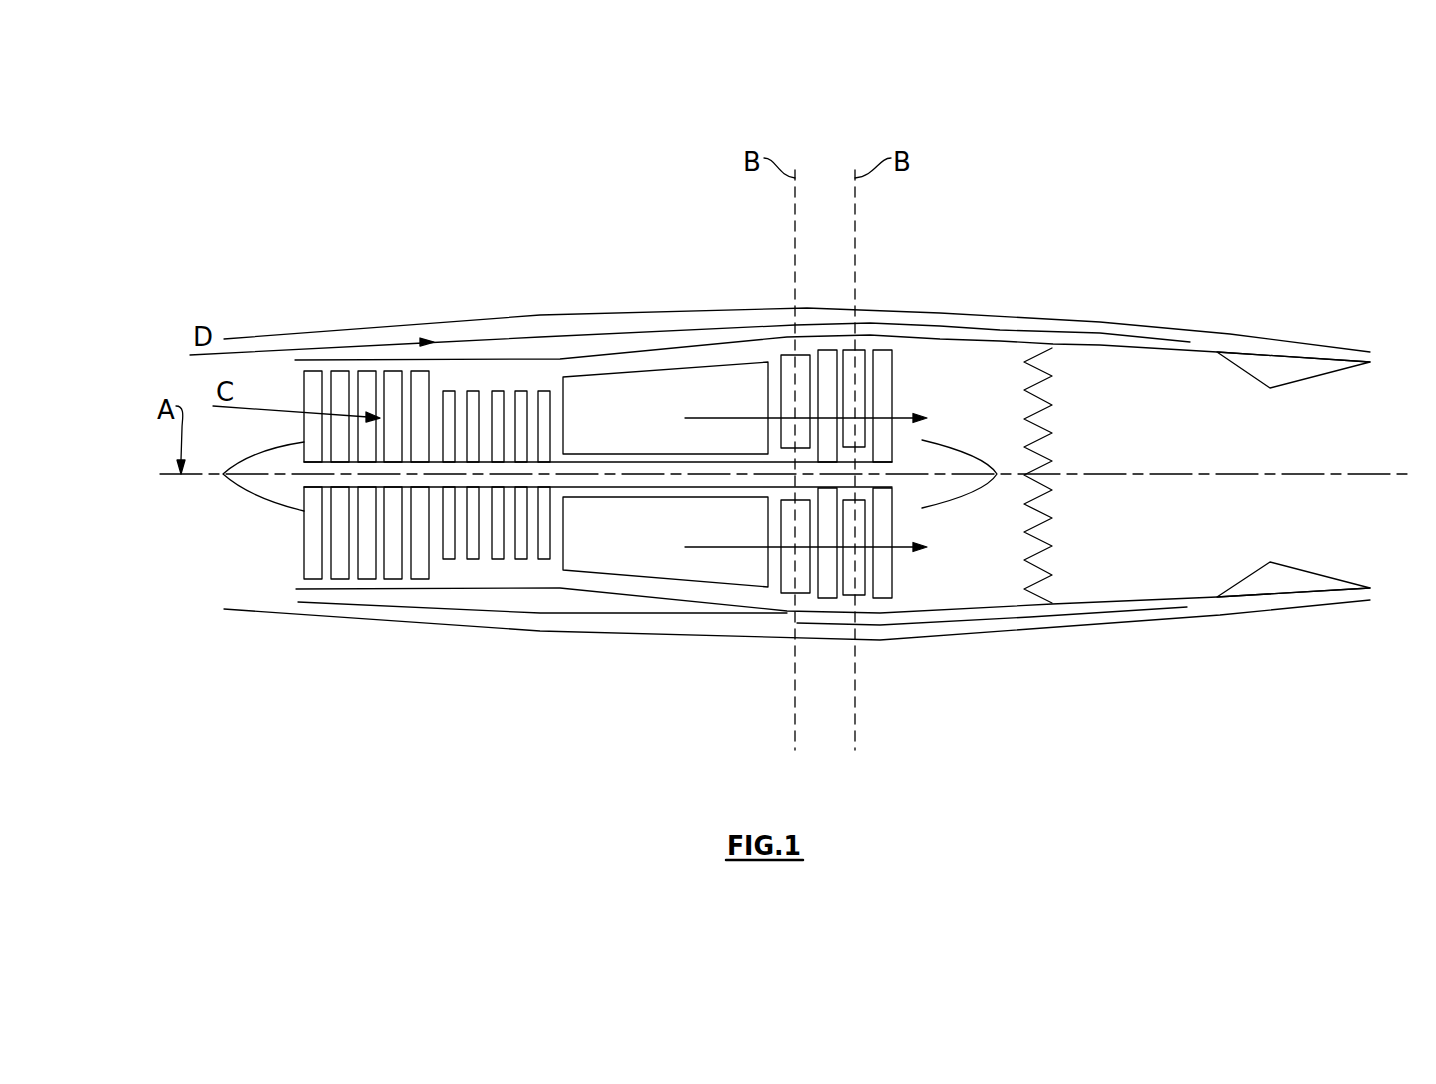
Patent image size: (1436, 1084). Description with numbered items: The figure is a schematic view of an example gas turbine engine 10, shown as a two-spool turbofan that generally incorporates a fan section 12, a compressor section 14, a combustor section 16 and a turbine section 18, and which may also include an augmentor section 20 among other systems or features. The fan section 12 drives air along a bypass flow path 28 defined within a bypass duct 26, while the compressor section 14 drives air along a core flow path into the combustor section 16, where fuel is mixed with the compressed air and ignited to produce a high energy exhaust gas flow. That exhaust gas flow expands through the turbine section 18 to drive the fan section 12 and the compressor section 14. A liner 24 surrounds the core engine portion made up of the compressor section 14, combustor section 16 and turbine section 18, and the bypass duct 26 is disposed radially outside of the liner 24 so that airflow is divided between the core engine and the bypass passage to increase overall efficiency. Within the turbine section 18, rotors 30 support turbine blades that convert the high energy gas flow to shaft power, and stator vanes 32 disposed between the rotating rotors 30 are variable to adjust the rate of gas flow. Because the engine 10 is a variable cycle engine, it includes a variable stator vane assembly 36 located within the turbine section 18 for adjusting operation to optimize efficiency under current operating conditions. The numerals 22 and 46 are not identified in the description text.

The gas turbine engine 10 is at (238, 662).
The fan section 12 is at (370, 579).
The compressor section 14 is at (498, 559).
The combustor section 16 is at (667, 582).
The turbine section 18 is at (834, 542).
The augmentor section 20 is at (1066, 559).
The nozzle flap 22 is at (1278, 575).
The liner 24 is at (725, 327).
The bypass duct 26 is at (608, 300).
The bypass flow path 28 is at (842, 323).
The rotors 30 is at (882, 363).
The stator vanes 32 is at (788, 372).
The variable stator vane assembly 36 is at (777, 610).
The core airflow 46 is at (698, 418).